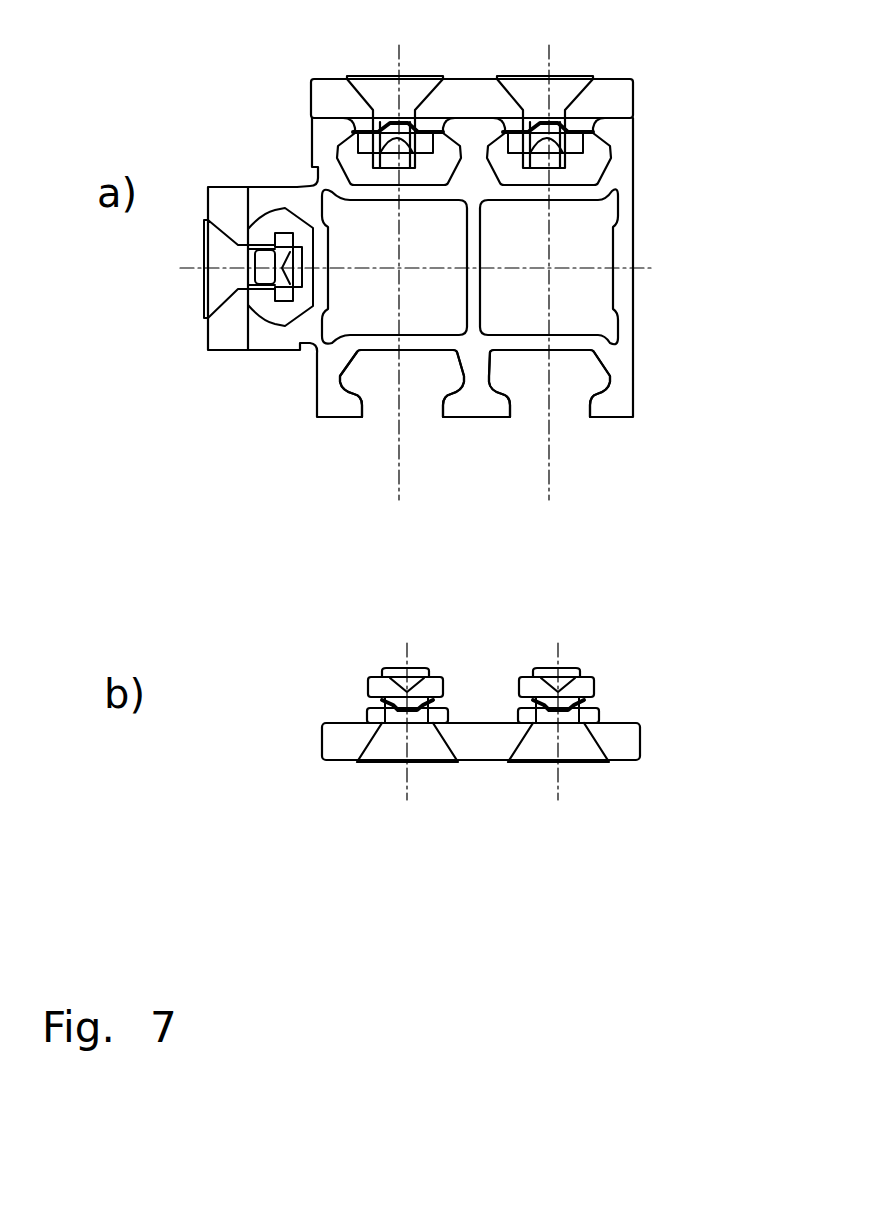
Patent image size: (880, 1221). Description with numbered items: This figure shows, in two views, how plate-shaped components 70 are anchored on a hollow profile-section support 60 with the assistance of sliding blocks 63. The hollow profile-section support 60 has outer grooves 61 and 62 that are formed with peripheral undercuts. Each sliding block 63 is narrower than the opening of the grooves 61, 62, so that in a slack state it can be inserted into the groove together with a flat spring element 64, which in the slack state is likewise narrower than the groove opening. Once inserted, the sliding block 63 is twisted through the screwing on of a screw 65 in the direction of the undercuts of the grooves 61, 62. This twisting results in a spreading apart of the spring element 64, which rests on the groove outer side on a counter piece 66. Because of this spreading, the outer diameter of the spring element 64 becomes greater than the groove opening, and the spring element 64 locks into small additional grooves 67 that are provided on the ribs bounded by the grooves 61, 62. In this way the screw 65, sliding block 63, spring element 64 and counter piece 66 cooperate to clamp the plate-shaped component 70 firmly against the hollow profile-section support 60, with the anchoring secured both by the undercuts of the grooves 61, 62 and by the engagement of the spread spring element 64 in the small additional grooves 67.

The hollow profile-section support 60 is at (622, 370).
The outer groove 61 is at (580, 386).
The outer groove 62 is at (288, 222).
The sliding block 63 is at (594, 681).
The flat spring element 64 is at (590, 135).
The screw 65 is at (573, 751).
The counter piece 66 is at (600, 709).
The small additional groove 67 is at (362, 403).
The plate-shaped component 70 is at (615, 97).